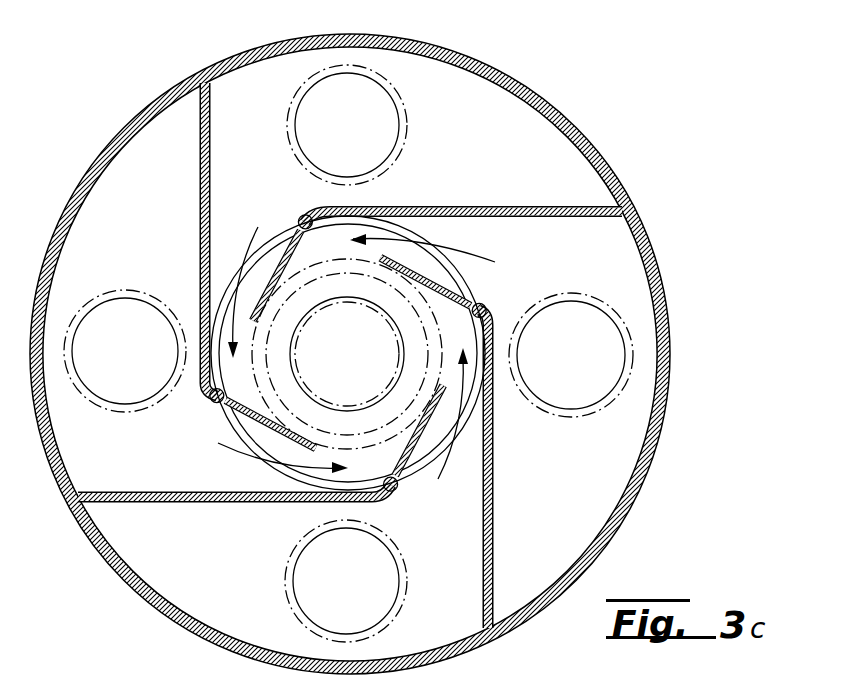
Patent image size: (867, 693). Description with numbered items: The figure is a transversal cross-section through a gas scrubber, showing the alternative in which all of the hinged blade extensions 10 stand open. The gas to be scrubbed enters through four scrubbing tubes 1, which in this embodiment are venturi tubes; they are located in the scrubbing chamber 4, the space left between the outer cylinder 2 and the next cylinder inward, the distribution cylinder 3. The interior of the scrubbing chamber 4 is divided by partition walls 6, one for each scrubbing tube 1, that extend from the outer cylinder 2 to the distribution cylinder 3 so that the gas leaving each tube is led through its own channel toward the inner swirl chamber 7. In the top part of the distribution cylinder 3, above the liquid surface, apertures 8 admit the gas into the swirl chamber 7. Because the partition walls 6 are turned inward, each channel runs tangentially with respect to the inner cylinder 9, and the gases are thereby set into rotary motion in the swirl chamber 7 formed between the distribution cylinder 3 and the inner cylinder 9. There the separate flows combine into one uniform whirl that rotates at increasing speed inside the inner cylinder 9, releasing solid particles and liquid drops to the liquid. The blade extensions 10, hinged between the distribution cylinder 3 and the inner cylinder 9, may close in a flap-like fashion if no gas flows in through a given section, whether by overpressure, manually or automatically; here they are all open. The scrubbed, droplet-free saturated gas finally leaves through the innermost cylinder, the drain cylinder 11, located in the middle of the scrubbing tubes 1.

The scrubbing tube 1 is at (400, 97).
The outer cylinder 2 is at (560, 120).
The distribution cylinder 3 is at (478, 287).
The scrubbing chamber 4 is at (110, 172).
The partition wall 6 is at (200, 185).
The swirl chamber 7 is at (390, 215).
The aperture 8 is at (275, 230).
The inner cylinder 9 is at (344, 262).
The blade extension 10 is at (415, 287).
The drain cylinder 11 is at (330, 418).